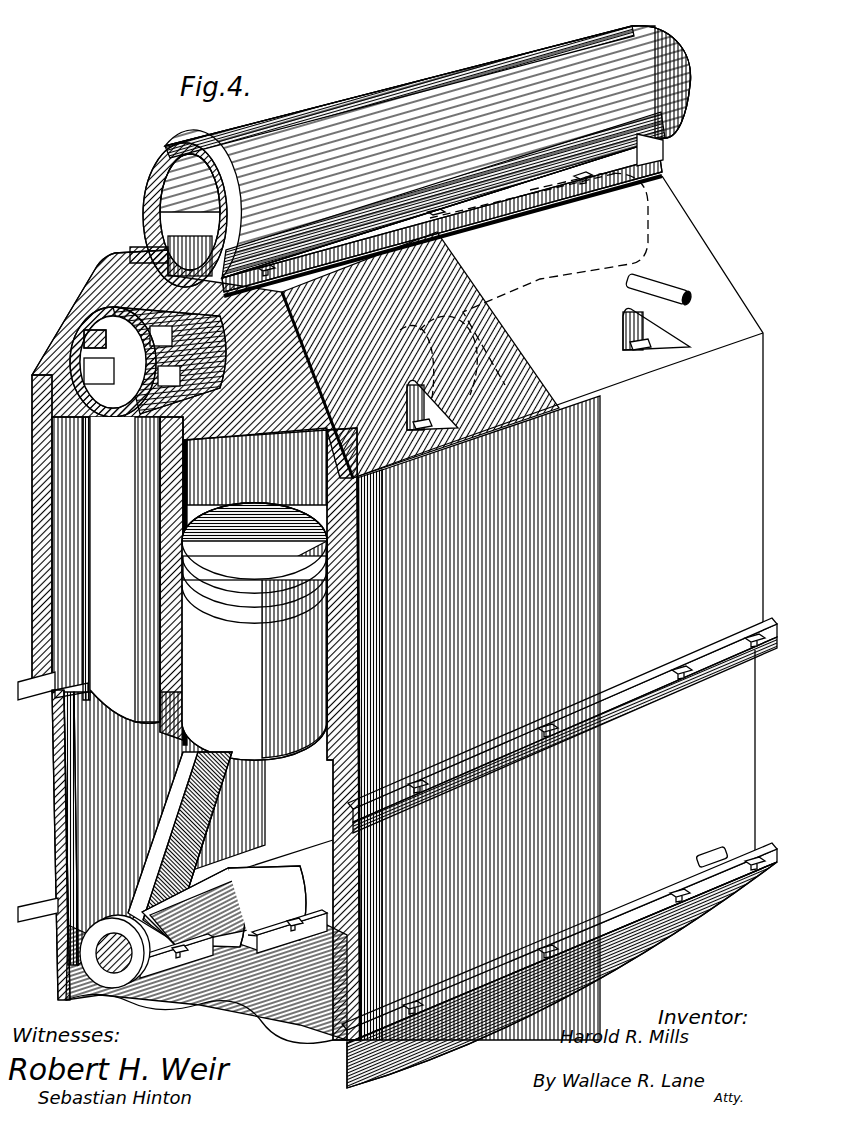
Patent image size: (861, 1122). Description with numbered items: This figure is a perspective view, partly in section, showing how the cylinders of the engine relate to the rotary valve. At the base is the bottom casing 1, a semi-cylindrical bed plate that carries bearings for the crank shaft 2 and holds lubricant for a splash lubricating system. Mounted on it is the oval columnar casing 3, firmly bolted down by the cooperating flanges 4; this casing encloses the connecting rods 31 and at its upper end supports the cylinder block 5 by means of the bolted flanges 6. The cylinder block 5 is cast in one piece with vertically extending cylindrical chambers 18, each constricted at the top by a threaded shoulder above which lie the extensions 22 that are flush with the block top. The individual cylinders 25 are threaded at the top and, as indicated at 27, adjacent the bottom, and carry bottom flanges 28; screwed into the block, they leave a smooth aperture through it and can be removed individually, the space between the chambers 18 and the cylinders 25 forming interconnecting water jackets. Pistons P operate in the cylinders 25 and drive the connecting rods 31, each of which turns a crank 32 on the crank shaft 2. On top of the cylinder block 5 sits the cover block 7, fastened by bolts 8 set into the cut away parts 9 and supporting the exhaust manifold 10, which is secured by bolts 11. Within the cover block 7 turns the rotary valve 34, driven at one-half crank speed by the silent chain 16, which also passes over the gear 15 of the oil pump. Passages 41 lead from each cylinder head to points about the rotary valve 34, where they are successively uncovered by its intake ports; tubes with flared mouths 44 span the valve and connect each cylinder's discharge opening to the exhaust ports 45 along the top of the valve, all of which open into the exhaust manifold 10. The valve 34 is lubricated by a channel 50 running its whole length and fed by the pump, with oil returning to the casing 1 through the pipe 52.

The bottom casing 1 is at (80, 955).
The crank shaft 2 is at (84, 971).
The oval columnar casing 3 is at (58, 750).
The flanges 4 is at (48, 913).
The cylinder block 5 is at (45, 514).
The flanges 6 is at (26, 690).
The cover block 7 is at (690, 225).
The bolts 8 is at (631, 354).
The cut away parts 9 is at (626, 347).
The exhaust manifold 10 is at (305, 111).
The bolts 11 is at (584, 174).
The gear 15 is at (442, 215).
The silent chain 16 is at (404, 232).
The cylindrical chambers 18 is at (335, 537).
The extensions 22 is at (330, 471).
The cylinders 25 is at (178, 481).
The threads 27 is at (345, 775).
The bottom flanges 28 is at (184, 754).
The connecting rods 31 is at (224, 872).
The crank 32 is at (231, 944).
The rotary valve 34 is at (82, 332).
The passages 41 is at (413, 310).
The flared mouths 44 is at (193, 347).
The exhaust ports 45 is at (156, 248).
The channel 50 is at (224, 470).
The pipe 52 is at (664, 288).
The pistons P is at (192, 650).